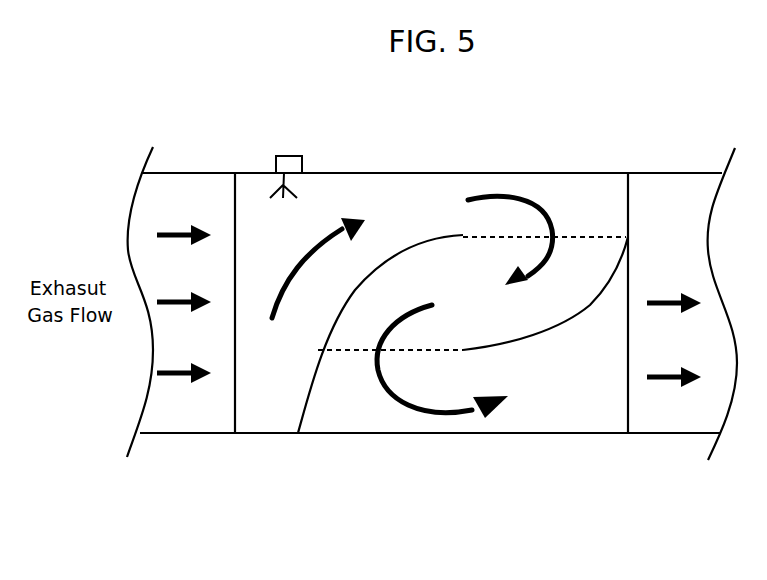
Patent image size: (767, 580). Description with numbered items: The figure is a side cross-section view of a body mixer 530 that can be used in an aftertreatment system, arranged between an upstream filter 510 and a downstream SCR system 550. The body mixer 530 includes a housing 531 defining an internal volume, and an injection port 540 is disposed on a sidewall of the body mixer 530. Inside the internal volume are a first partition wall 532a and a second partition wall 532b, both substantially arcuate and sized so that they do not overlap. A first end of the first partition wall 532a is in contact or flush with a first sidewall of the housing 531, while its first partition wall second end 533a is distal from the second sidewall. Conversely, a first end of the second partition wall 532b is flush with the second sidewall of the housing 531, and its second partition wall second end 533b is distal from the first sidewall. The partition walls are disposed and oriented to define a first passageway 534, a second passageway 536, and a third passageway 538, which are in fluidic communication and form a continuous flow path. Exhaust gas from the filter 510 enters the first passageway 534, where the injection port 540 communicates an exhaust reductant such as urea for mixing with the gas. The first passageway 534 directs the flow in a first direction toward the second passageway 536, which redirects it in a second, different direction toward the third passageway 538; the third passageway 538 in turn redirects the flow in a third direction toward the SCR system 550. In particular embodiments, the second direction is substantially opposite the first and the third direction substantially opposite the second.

The filter 510 is at (187, 413).
The body mixer 530 is at (519, 124).
The housing 531 is at (462, 433).
The first partition wall 532a is at (302, 408).
The second partition wall 532b is at (573, 323).
The first partition wall second end 533a is at (463, 235).
The second partition wall second end 533b is at (463, 352).
The first passageway 534 is at (273, 387).
The second passageway 536 is at (573, 268).
The third passageway 538 is at (542, 400).
The injection port 540 is at (289, 156).
The SCR system 550 is at (683, 417).